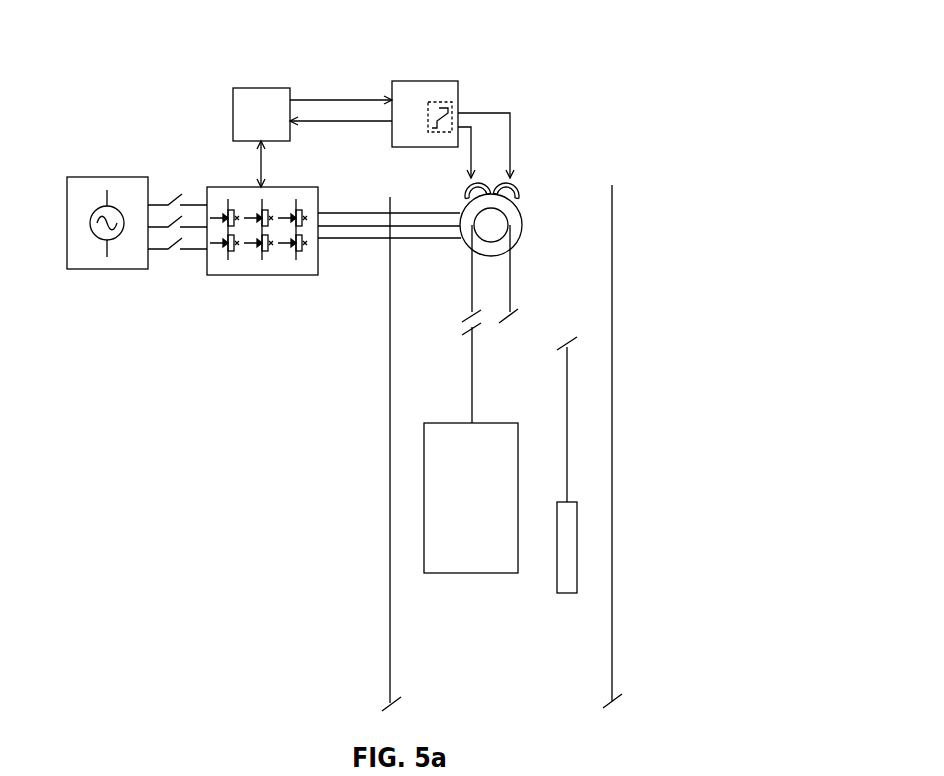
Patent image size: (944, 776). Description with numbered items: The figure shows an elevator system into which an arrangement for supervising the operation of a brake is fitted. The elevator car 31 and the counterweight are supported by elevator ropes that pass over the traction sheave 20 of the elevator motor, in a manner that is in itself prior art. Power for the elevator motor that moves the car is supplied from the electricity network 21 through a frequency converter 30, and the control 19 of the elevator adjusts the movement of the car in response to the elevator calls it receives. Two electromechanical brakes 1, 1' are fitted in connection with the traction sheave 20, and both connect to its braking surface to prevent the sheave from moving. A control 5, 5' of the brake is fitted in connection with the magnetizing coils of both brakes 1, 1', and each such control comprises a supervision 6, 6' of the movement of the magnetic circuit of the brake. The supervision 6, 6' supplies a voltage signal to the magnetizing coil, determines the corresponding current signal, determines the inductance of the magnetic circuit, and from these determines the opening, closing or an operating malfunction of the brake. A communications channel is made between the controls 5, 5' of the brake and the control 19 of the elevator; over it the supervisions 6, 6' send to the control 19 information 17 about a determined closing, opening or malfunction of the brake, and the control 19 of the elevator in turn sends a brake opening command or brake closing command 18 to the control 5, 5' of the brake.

The electromechanical brake 1 is at (462, 163).
The electromechanical brake 1' is at (516, 156).
The control of the brake 5 is at (467, 75).
The control of the brake 5' is at (425, 114).
The supervision of the movement of the magnetic circuit 6 is at (440, 117).
The supervision of the movement of the magnetic circuit 6' is at (440, 117).
The information about a determined closing, opening and/or operating malfunction of 17 is at (345, 123).
The brake opening command or brake closing command 18 is at (337, 98).
The control of the elevator 19 is at (253, 88).
The traction sheave 20 is at (522, 221).
The electricity network 21 is at (110, 270).
The frequency converter 30 is at (258, 275).
The elevator car 31 is at (475, 575).